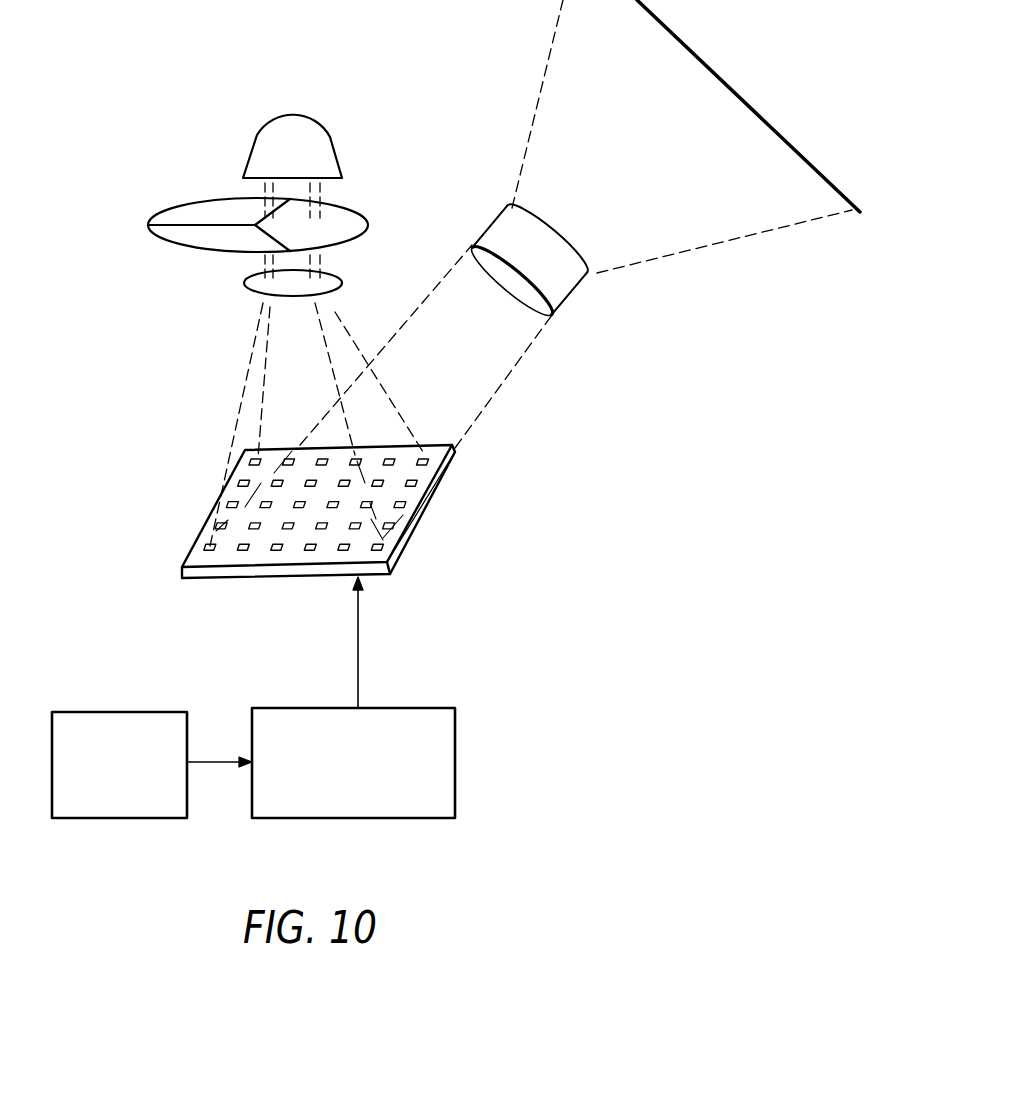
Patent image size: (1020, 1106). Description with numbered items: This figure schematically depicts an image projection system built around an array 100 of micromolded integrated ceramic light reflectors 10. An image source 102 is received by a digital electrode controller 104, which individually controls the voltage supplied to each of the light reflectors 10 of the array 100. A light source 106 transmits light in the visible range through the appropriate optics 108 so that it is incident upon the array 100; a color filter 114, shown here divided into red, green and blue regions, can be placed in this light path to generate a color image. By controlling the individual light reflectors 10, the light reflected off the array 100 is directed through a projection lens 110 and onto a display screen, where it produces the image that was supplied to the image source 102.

The micromolded integrated ceramic light reflector 10 is at (205, 549).
The array 100 is at (306, 512).
The image source 102 is at (120, 818).
The digital electrode controller 104 is at (455, 768).
The light source 106 is at (310, 134).
The optics 108 is at (333, 280).
The projection lens 110 is at (562, 253).
The color filter 114 is at (350, 222).